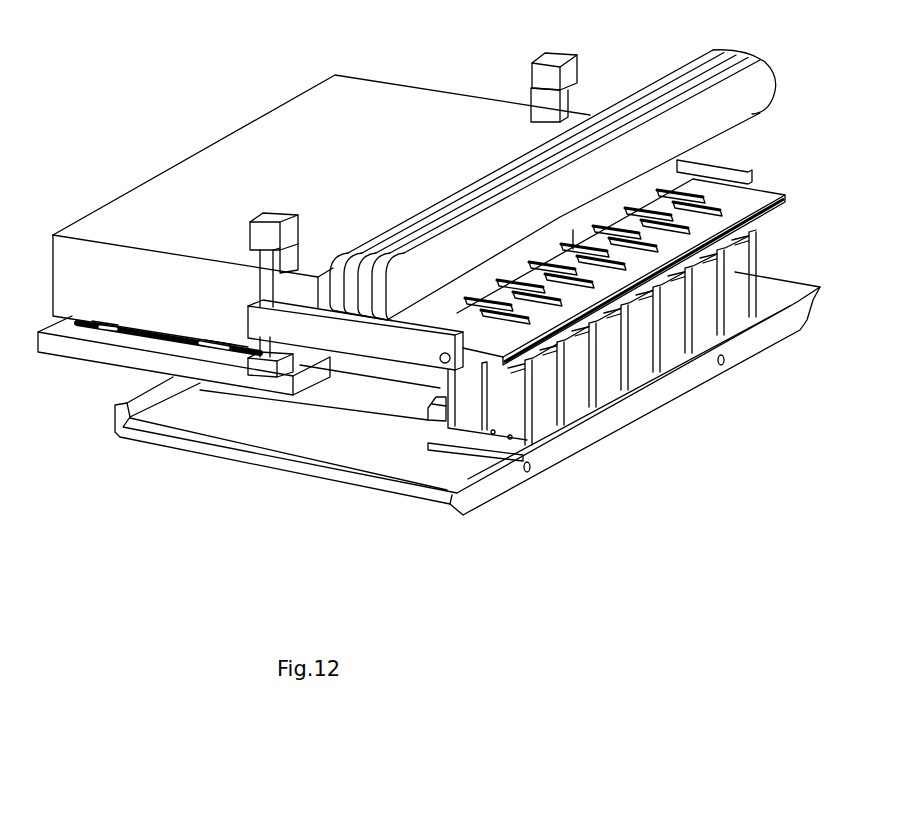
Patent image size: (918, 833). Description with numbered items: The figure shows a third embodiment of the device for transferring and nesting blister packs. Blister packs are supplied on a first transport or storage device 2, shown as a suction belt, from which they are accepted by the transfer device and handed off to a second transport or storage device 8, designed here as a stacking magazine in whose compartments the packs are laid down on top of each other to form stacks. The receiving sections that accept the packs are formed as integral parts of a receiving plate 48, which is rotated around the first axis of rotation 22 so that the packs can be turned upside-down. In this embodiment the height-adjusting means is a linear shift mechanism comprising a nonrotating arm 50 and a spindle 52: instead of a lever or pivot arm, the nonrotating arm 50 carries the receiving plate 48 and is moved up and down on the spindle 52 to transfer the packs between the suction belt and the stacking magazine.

The first transport or storage device 2 is at (545, 193).
The second transport or storage device 8 is at (737, 292).
The first axis of rotation 22 is at (440, 362).
The receiving plate 48 is at (495, 342).
The nonrotating arm 50 is at (352, 339).
The spindle 52 is at (192, 341).